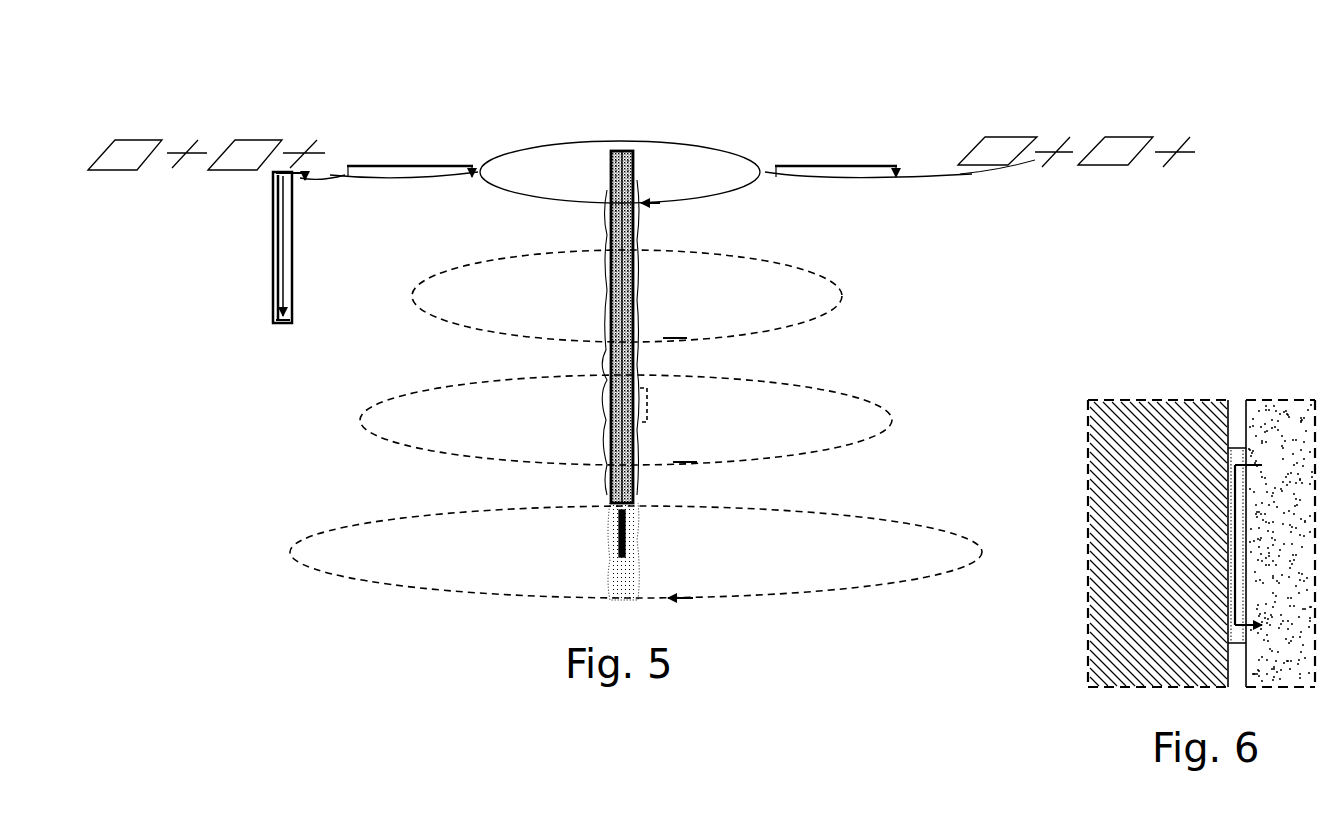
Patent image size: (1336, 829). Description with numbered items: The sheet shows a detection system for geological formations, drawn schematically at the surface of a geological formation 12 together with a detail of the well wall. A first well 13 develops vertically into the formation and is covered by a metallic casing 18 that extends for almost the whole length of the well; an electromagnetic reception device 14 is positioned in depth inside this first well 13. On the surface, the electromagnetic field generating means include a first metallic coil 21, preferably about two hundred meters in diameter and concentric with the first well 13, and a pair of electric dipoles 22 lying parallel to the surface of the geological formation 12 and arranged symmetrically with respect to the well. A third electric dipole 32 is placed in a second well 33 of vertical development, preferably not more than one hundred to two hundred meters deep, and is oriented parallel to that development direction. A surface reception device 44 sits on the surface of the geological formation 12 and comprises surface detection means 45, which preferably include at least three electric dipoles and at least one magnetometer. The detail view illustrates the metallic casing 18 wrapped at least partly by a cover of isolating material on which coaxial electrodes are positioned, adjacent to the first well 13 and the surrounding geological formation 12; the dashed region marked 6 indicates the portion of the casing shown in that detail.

In FIG. 5, the ultrasound probe detail region 6 is at (647, 410).
In FIG. 5, the geological formation 12 is at (923, 197).
In FIG. 6, the geological formation 12 is at (1288, 420).
In FIG. 5, the first well 13 is at (638, 570).
In FIG. 6, the first well 13 is at (1235, 412).
In FIG. 5, the electromagnetic reception device 14 is at (617, 540).
In FIG. 5, the metallic casing 18 is at (622, 152).
In FIG. 6, the metallic casing 18 is at (1127, 413).
In FIG. 5, the first metallic coil 21 is at (703, 148).
In FIG. 5, the electric dipoles 22 is at (415, 163).
In FIG. 5, the third electric dipole 32 is at (280, 288).
In FIG. 5, the second well 33 is at (278, 322).
In FIG. 5, the surface reception device 44 is at (201, 98).
In FIG. 5, the surface detection means 45 is at (192, 148).